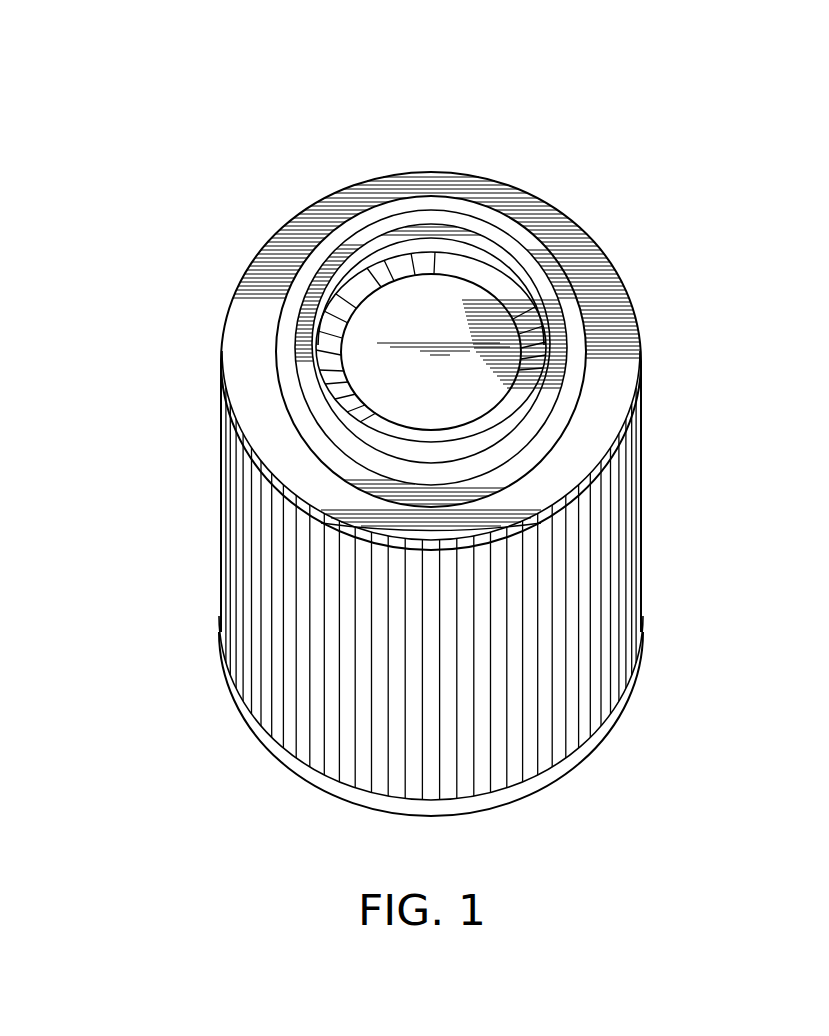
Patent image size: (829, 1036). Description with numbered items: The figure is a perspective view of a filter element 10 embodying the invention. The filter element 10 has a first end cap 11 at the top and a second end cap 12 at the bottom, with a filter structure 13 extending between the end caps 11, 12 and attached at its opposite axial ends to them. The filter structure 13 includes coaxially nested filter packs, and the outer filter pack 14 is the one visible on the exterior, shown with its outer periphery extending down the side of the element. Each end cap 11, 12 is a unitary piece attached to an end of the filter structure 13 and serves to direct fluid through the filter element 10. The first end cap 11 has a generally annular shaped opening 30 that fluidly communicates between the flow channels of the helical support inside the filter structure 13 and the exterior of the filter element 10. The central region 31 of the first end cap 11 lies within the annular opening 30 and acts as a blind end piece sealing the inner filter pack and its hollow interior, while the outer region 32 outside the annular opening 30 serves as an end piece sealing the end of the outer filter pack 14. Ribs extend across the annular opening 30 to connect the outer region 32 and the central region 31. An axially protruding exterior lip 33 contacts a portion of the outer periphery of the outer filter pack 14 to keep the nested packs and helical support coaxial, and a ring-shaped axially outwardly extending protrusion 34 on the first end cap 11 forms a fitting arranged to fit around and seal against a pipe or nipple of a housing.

The filter element 10 is at (112, 118).
The first end cap 11 is at (323, 193).
The second end cap 12 is at (573, 772).
The filter structure 13 is at (612, 550).
The outer filter pack 14 is at (295, 707).
The annular opening 30 is at (543, 314).
The central region 31 is at (440, 305).
The outer region 32 is at (253, 283).
The exterior lip 33 is at (277, 485).
The protrusion 34 is at (303, 417).